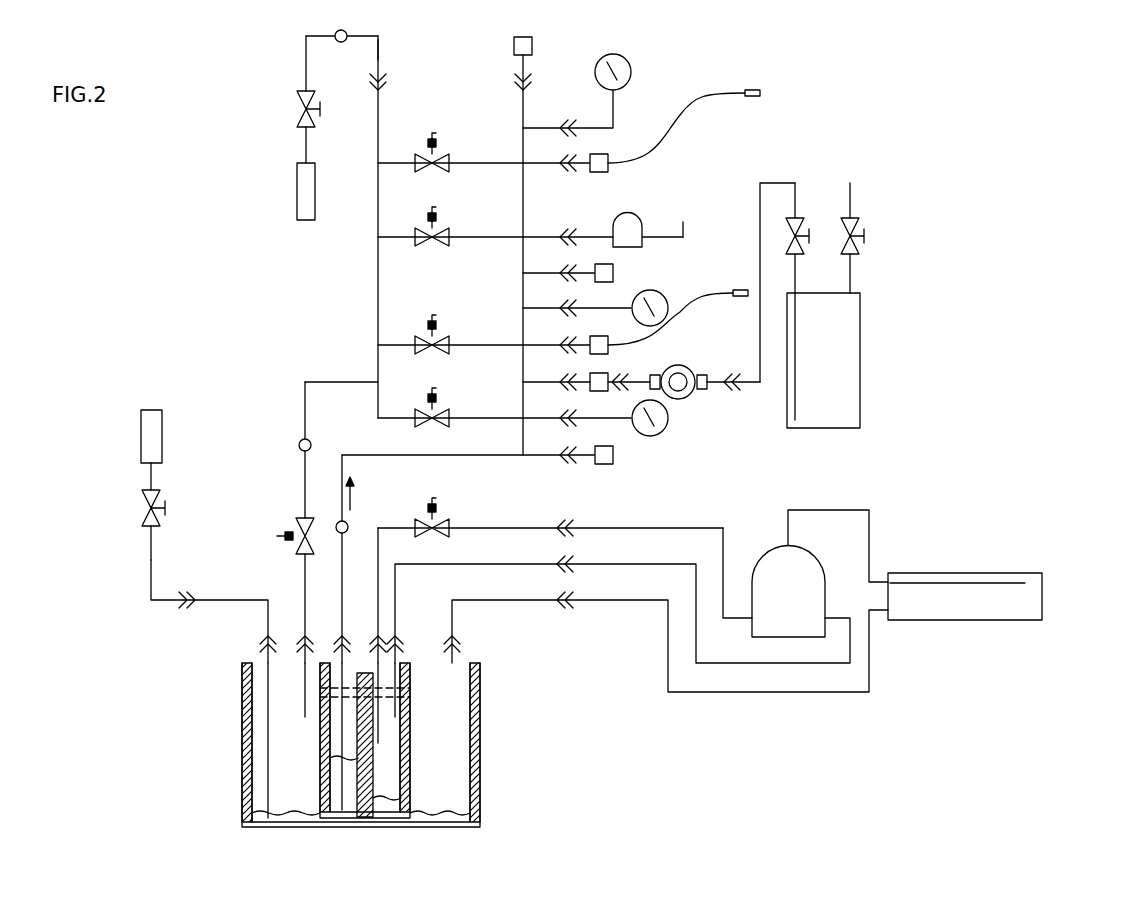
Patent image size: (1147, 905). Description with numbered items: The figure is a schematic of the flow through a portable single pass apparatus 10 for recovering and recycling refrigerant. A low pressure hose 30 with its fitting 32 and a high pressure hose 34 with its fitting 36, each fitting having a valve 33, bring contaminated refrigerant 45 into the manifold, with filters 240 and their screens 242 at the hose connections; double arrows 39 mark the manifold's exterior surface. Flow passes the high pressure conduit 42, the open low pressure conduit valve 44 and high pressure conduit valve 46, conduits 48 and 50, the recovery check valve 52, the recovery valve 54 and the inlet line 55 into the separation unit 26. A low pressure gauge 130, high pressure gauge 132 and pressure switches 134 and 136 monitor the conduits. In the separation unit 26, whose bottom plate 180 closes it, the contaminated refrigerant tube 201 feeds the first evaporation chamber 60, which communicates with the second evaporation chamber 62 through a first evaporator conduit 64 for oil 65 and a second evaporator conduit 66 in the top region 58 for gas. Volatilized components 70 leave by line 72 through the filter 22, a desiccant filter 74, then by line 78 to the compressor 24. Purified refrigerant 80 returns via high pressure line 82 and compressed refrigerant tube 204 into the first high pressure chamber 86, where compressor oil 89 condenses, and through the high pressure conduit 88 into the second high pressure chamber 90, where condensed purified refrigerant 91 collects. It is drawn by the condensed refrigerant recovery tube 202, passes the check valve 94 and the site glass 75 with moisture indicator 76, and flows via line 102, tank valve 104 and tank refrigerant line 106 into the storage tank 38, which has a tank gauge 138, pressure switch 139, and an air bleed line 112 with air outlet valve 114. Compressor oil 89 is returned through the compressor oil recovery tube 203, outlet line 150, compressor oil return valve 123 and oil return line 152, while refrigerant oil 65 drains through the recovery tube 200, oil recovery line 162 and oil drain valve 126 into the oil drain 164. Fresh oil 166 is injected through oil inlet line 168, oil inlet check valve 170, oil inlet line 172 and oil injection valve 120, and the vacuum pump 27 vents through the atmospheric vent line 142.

The portable apparatus for recovering and recycling refrigerant 10 is at (973, 198).
The filter 22 is at (1044, 592).
The compressor 24 is at (815, 553).
The separation unit 26 is at (480, 815).
The vacuum pump 27 is at (642, 218).
The low pressure hose 30 is at (710, 93).
The low pressure hose fitting 32 is at (757, 90).
The valves 33 is at (762, 93).
The high pressure hose 34 is at (703, 293).
The high pressure hose fitting 36 is at (740, 290).
The refrigerant storage tank 38 is at (862, 358).
The double arrows 39 is at (386, 88).
The high pressure conduit 42 is at (505, 350).
The low pressure conduit valve 44 is at (446, 153).
The contaminated refrigerant 45 is at (357, 386).
The high pressure conduit valve 46 is at (447, 345).
The conduit 48 is at (378, 285).
The conduit 50 is at (340, 380).
The recovery check valve 52 is at (298, 442).
The recovery valve 54 is at (296, 516).
The contaminated refrigerant inlet line 55 is at (305, 580).
The top region 58 is at (222, 708).
The first evaporation chamber 60 is at (258, 760).
The second evaporation chamber 62 is at (456, 796).
The first evaporator conduit 64 is at (368, 820).
The oil 65 is at (260, 823).
The second evaporator conduit 66 is at (412, 693).
The volatilized components 70 is at (462, 670).
The volatilized components line 72 is at (497, 643).
The desiccant filter 74 is at (960, 621).
The site glass 75 is at (692, 396).
The moisture indicator 76 is at (675, 400).
The line 78 is at (870, 545).
The purified refrigerant 80 is at (843, 508).
The high pressure line 82 is at (720, 663).
The first high pressure chamber 86 is at (396, 758).
The high pressure conduit 88 is at (372, 660).
The compressor oil 89 is at (387, 814).
The second high pressure chamber 90 is at (331, 737).
The condensed purified refrigerant 91 is at (344, 816).
The check valve 94 is at (344, 531).
The purified refrigerant line 102 is at (752, 386).
The tank valve 104 is at (797, 222).
The tank refrigerant line 106 is at (797, 291).
The air bleed line 112 is at (852, 291).
The air outlet valve 114 is at (857, 222).
The oil injection valve 120 is at (298, 92).
The compressor oil return valve 123 is at (446, 520).
The oil drain valve 126 is at (165, 496).
The low pressure gauge 130 is at (630, 63).
The high pressure gauge 132 is at (645, 293).
The pressure switch 134 is at (533, 43).
The pressure switch 136 is at (613, 273).
The refrigerant tank gauge 138 is at (662, 436).
The pressure switch 139 is at (600, 464).
The atmospheric vent line 142 is at (687, 221).
The compressor oil outlet line 150 is at (382, 558).
The oil return line 152 is at (485, 530).
The refrigerant oil recovery line 162 is at (152, 560).
The oil drain 164 is at (162, 438).
The fresh oil 166 is at (297, 190).
The oil inlet line 168 is at (312, 36).
The oil inlet check valve 170 is at (348, 33).
The oil inlet line 172 is at (380, 50).
The bottom plate or cover 180 is at (300, 828).
The refrigerant oil recovery tube 200 is at (268, 777).
The contaminated refrigerant tube 201 is at (305, 705).
The condensed refrigerant recovery tube 202 is at (341, 788).
The compressor oil recovery tube 203 is at (380, 743).
The compressed refrigerant tube 204 is at (396, 717).
The filters 240 is at (606, 156).
The screens 242 is at (608, 173).